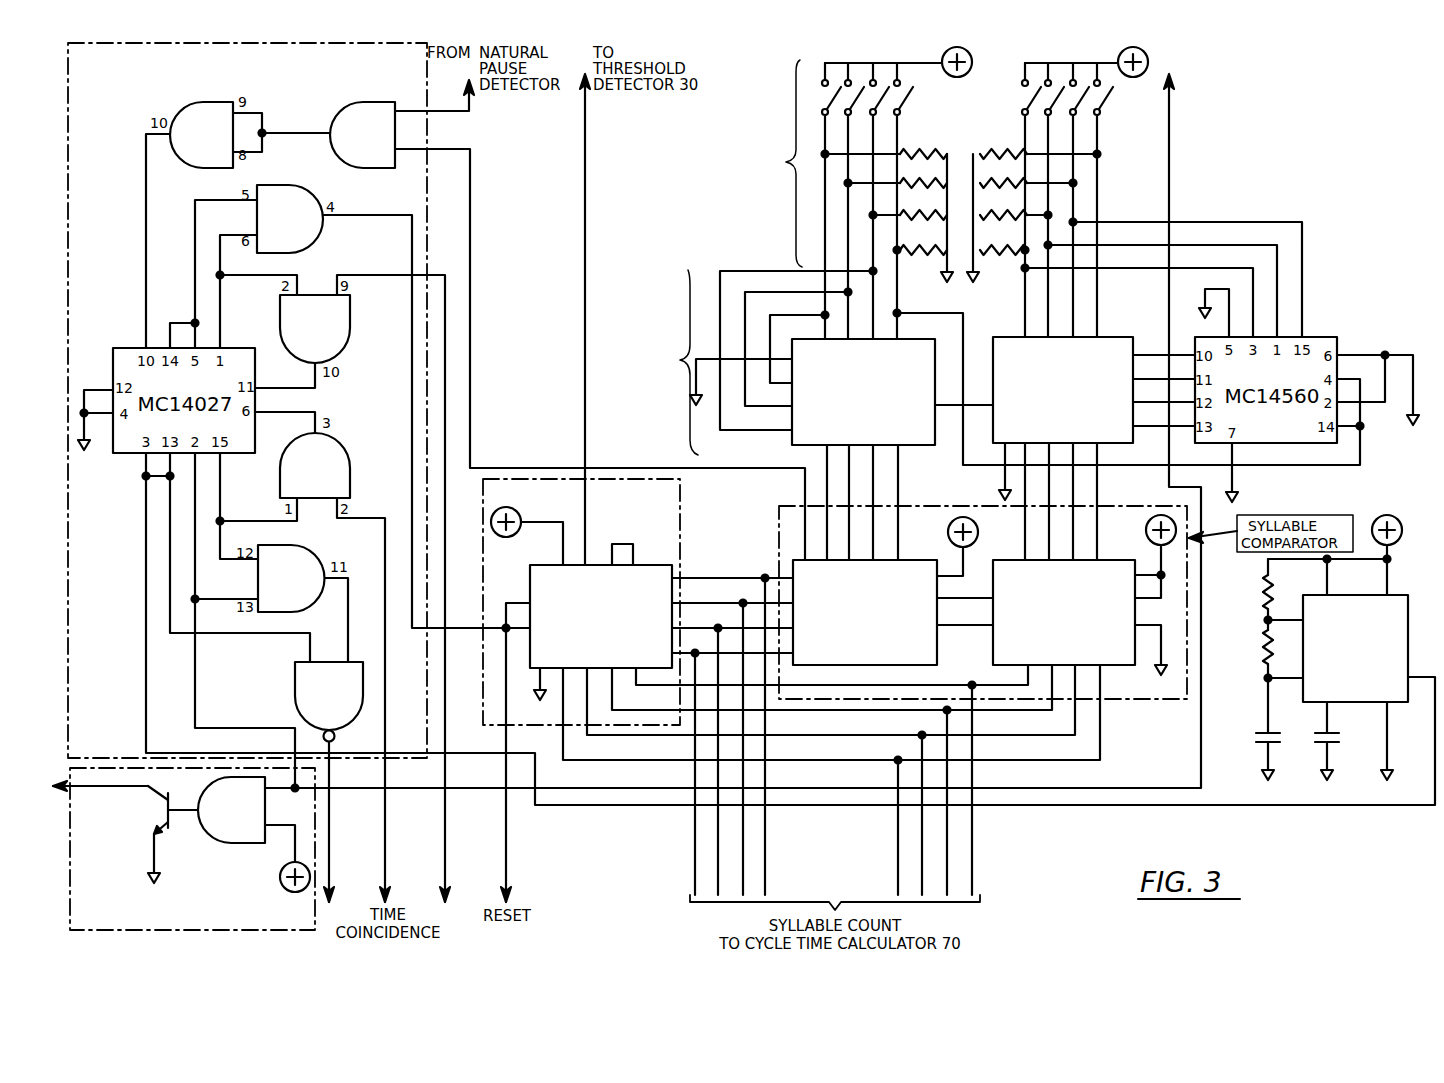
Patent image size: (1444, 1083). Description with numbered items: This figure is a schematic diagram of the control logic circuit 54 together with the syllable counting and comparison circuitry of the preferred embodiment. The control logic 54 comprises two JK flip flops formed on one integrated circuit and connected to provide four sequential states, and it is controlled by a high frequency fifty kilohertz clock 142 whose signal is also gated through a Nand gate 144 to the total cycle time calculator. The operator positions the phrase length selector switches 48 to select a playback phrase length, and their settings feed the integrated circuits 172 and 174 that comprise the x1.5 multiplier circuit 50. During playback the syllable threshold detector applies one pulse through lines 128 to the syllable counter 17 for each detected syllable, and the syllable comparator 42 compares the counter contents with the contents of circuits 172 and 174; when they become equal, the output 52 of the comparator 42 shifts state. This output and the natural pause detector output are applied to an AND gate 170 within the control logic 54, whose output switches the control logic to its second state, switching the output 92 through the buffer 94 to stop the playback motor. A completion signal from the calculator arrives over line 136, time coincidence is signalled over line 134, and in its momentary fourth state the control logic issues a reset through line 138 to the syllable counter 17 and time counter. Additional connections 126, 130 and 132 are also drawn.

The control logic circuit 54 is at (120, 97).
The AND gate 170 is at (372, 102).
The input from natural pause detector 126 is at (470, 110).
The lines 128 is at (586, 113).
The output 52 is at (471, 203).
The phrase length selector switches 48 is at (788, 160).
The x1.5 multiplier circuit 50 is at (672, 352).
The integrated circuit 174 is at (906, 339).
The integrated circuit 172 is at (1108, 337).
The output line 130 is at (1170, 113).
The syllable counter 17 is at (648, 523).
The syllable comparator 42 is at (1016, 544).
The clock 142 is at (1368, 595).
The Nand gate 144 is at (295, 672).
The output 92 is at (224, 728).
The buffer 94 is at (197, 900).
The time coincidence output 132 is at (331, 872).
The line 134 is at (387, 872).
The line 136 is at (447, 872).
The line 138 is at (508, 872).